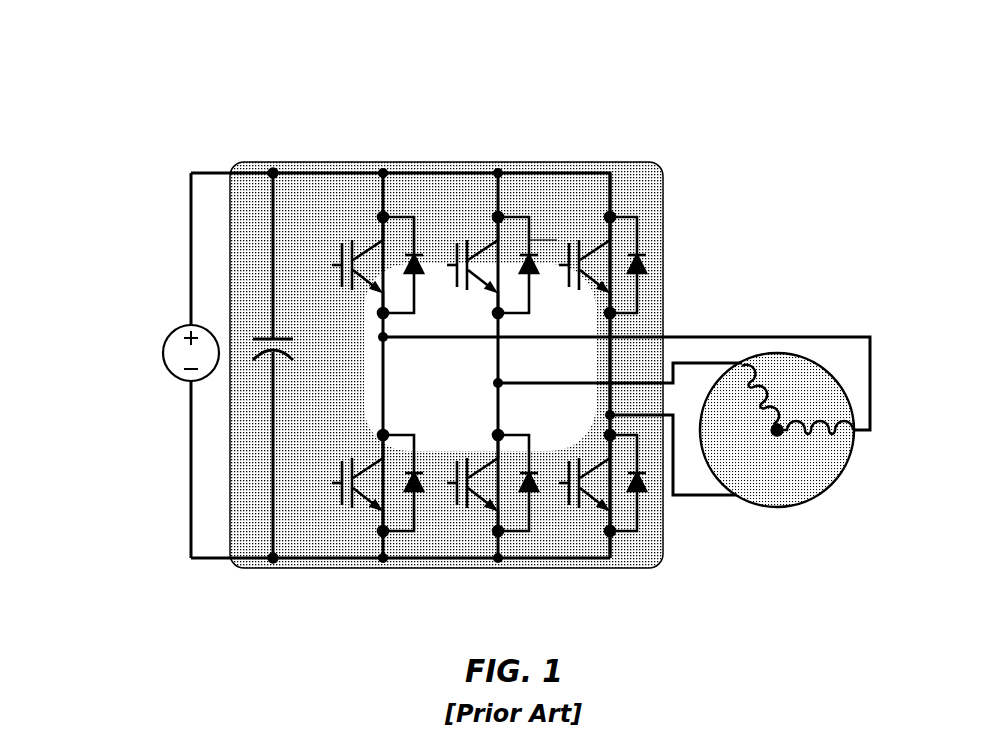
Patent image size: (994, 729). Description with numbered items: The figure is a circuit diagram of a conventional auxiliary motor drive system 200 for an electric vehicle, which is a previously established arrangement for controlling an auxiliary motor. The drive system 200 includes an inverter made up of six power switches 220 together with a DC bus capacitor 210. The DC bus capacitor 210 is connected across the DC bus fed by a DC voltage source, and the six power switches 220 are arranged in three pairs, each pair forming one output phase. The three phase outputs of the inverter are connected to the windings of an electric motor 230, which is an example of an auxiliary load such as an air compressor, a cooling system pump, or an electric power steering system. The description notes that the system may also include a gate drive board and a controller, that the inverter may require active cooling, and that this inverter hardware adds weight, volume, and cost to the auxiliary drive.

The auxiliary motor drive system 200 is at (86, 74).
The DC bus capacitor 210 is at (250, 283).
The power switches 220 is at (667, 150).
The electric motor 230 is at (850, 457).